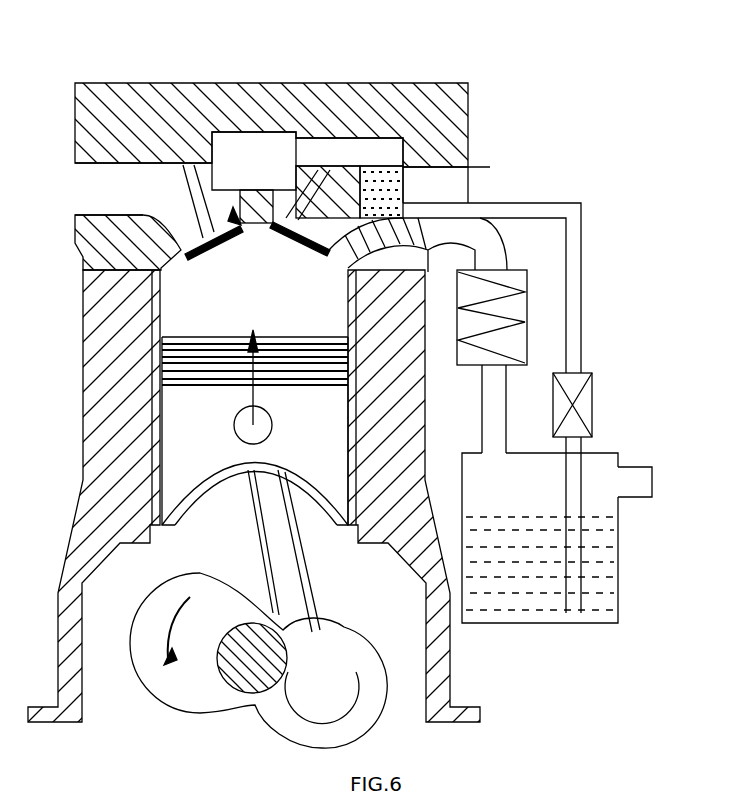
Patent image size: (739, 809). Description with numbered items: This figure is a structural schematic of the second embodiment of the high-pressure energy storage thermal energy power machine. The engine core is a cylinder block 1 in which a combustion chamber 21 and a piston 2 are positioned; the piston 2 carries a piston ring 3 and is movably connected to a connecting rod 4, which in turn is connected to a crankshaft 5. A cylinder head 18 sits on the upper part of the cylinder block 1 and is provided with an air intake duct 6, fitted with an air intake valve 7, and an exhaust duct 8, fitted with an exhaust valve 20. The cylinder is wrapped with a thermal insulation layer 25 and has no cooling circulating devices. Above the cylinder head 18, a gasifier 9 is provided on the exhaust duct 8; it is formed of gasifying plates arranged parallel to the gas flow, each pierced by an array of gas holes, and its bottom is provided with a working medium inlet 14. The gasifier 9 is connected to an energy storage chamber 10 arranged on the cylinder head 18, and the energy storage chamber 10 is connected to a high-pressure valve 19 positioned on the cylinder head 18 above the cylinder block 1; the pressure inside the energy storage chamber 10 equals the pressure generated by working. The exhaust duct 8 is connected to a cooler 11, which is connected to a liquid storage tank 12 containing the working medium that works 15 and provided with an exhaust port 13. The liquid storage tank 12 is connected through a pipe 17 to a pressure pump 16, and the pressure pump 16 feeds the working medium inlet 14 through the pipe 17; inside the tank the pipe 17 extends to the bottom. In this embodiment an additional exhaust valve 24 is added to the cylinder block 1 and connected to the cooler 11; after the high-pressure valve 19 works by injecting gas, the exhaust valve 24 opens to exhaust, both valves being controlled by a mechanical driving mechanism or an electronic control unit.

The cylinder block 1 is at (185, 398).
The piston 2 is at (150, 472).
The piston ring 3 is at (190, 455).
The connecting rod 4 is at (285, 540).
The crankshaft 5 is at (182, 683).
The air intake duct 6 is at (97, 197).
The air intake valve 7 is at (180, 218).
The exhaust duct 8 is at (455, 210).
The gasifier 9 is at (432, 165).
The energy storage chamber 10 is at (258, 150).
The cooler 11 is at (530, 298).
The liquid storage tank 12 is at (590, 458).
The exhaust port 13 is at (633, 483).
The working medium inlet 14 is at (400, 195).
The working medium that works 15 is at (510, 612).
The pressure pump 16 is at (593, 395).
The pipe 17 is at (584, 330).
The cylinder head 18 is at (372, 98).
The high-pressure valve 19 is at (264, 228).
The exhaust valve 20 is at (300, 246).
The combustion chamber 21 is at (170, 300).
The exhaust valve 24 is at (415, 245).
The thermal insulation layer 25 is at (165, 530).